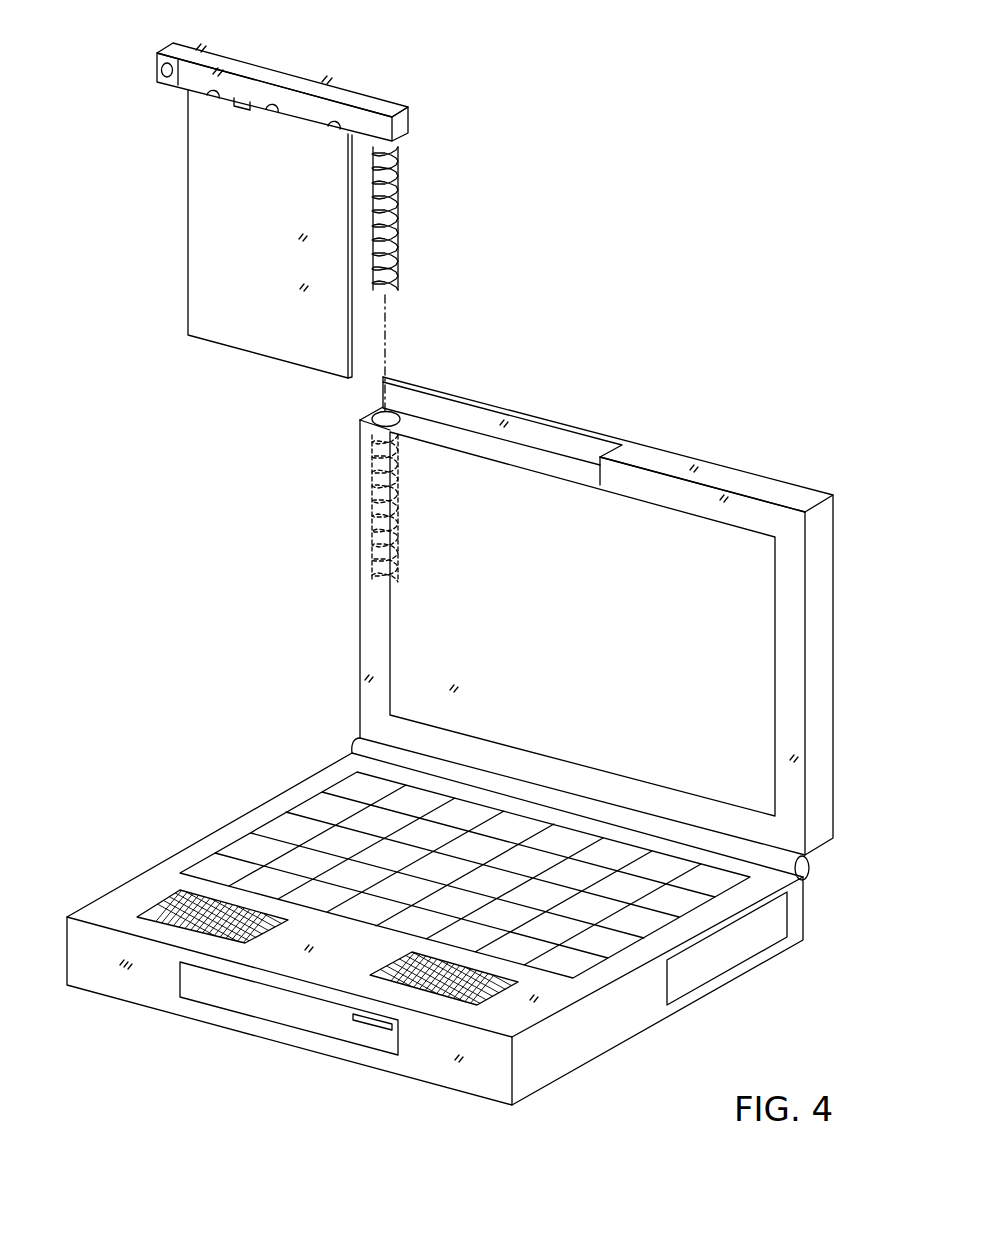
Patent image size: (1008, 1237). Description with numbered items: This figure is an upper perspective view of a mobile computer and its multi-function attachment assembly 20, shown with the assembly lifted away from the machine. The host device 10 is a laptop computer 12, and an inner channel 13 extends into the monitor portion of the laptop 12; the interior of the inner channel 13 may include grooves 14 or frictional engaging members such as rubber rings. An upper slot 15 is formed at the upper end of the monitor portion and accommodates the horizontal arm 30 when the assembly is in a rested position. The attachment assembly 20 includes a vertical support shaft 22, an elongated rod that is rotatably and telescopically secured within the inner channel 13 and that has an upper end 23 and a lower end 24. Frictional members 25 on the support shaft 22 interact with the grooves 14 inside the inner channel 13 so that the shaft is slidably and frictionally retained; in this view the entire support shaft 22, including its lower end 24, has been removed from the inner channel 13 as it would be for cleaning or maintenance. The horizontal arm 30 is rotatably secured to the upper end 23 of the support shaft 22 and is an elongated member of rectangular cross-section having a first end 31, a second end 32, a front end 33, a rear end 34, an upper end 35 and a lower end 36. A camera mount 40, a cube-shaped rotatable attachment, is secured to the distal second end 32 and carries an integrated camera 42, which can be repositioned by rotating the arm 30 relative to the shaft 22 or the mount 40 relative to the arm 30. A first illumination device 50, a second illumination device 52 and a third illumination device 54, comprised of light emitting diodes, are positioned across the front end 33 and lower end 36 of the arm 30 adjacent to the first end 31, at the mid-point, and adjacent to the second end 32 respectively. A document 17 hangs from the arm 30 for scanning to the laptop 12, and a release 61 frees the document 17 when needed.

The host device 10 is at (435, 929).
The laptop computer 12 is at (713, 460).
The inner channel 13 is at (375, 418).
The grooves 14 is at (372, 490).
The upper slot 15 is at (545, 437).
The document 17 is at (247, 352).
The multi-function attachment assembly 20 is at (392, 92).
The support shaft 22 is at (387, 248).
The upper end of support shaft 23 is at (397, 147).
The lower end of support shaft 24 is at (387, 300).
The frictional members 25 is at (398, 218).
The horizontal arm 30 is at (325, 82).
The first end of horizontal arm 31 is at (402, 125).
The second end of horizontal arm 32 is at (197, 46).
The front end of horizontal arm 33 is at (278, 90).
The rear end of horizontal arm 34 is at (353, 88).
The upper end of horizontal arm 35 is at (220, 62).
The lower end of horizontal arm 36 is at (290, 123).
The camera mount 40 is at (157, 58).
The camera 42 is at (155, 75).
The first illumination device 50 is at (212, 100).
The second illumination device 52 is at (272, 112).
The third illumination device 54 is at (333, 128).
The release 61 is at (242, 107).